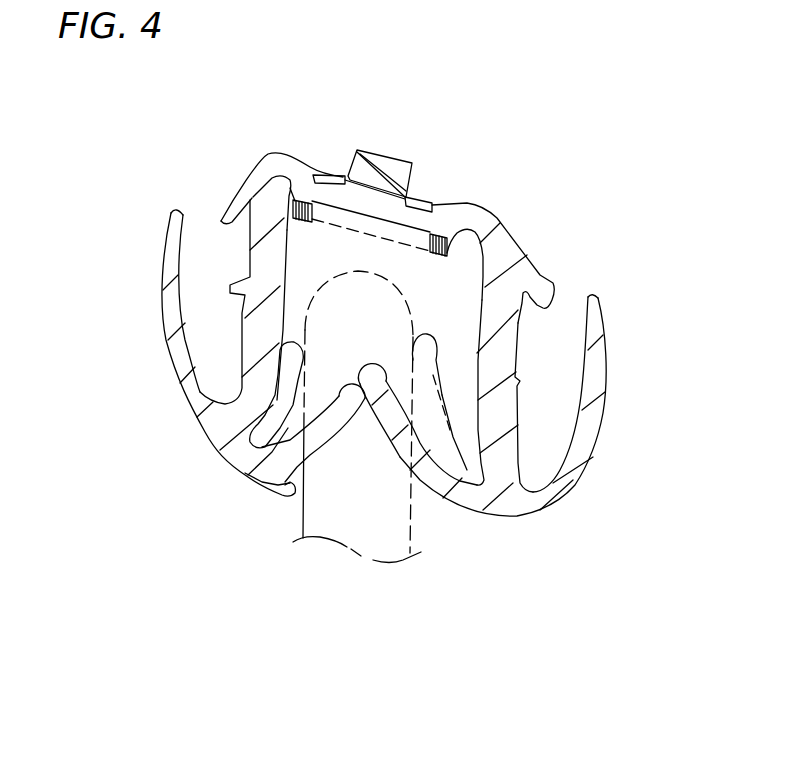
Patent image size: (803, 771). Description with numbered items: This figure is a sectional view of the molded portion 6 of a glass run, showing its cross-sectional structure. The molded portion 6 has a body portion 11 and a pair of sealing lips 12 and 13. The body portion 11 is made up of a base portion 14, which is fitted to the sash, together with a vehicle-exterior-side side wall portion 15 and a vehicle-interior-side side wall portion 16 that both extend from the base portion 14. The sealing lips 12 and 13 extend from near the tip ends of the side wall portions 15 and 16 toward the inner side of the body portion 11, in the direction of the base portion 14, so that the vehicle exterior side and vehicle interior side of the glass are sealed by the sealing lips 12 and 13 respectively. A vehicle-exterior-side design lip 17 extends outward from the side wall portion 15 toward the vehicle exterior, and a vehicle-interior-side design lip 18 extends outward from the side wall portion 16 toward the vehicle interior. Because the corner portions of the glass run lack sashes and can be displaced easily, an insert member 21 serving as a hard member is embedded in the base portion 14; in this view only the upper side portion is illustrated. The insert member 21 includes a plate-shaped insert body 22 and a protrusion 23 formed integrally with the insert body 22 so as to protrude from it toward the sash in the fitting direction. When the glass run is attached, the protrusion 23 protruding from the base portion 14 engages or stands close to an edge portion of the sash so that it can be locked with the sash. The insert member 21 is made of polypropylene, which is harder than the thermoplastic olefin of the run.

The molded portion 6 is at (244, 132).
The body portion 11 is at (497, 188).
The sealing lip 12 is at (337, 440).
The sealing lip 13 is at (438, 487).
The base portion 14 is at (305, 162).
The vehicle-exterior-side side wall portion 15 is at (241, 321).
The vehicle-interior-side side wall portion 16 is at (519, 395).
The vehicle-exterior-side design lip 17 is at (164, 314).
The vehicle-interior-side design lip 18 is at (603, 423).
The insert member 21 is at (375, 138).
The insert body 22 is at (424, 202).
The protrusion 23 is at (404, 166).